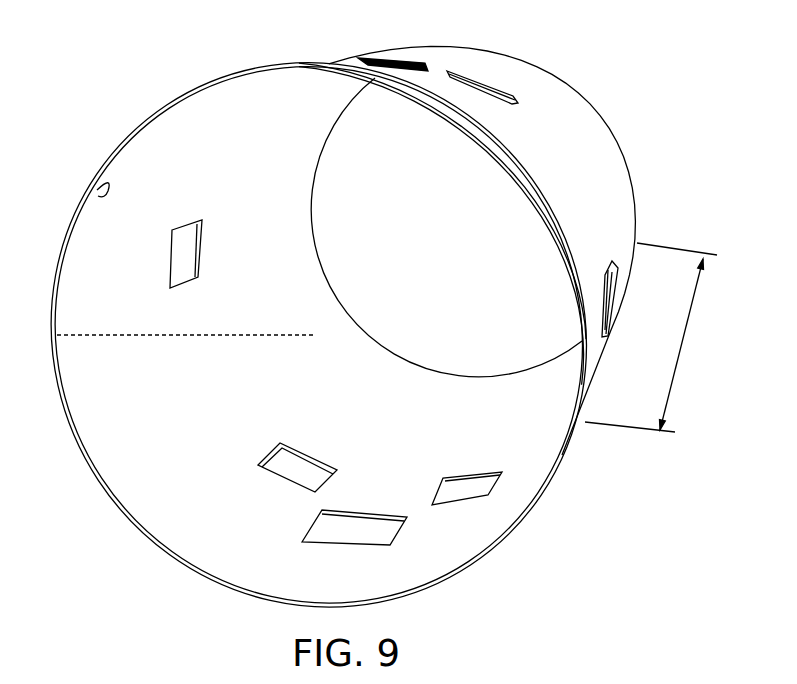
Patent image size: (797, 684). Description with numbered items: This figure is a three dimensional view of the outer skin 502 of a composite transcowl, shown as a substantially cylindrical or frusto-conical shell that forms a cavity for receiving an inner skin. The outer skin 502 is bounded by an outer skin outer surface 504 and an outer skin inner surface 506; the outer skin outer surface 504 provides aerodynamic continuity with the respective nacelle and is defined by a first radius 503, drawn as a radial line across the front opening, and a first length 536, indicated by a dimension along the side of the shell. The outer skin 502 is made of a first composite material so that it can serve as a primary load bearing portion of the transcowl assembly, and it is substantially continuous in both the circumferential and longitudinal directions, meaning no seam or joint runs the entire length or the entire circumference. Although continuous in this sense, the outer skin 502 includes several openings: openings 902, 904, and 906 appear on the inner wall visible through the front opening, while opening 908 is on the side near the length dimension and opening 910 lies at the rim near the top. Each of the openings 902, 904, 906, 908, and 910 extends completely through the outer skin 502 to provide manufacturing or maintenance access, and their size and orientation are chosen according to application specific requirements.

The outer skin 502 is at (168, 100).
The first radius 503 is at (110, 333).
The outer skin outer surface 504 is at (323, 62).
The outer skin inner surface 506 is at (97, 190).
The first length 536 is at (682, 358).
The opening 902 is at (194, 250).
The opening 904 is at (302, 472).
The opening 906 is at (360, 527).
The opening 908 is at (620, 287).
The opening 910 is at (405, 60).